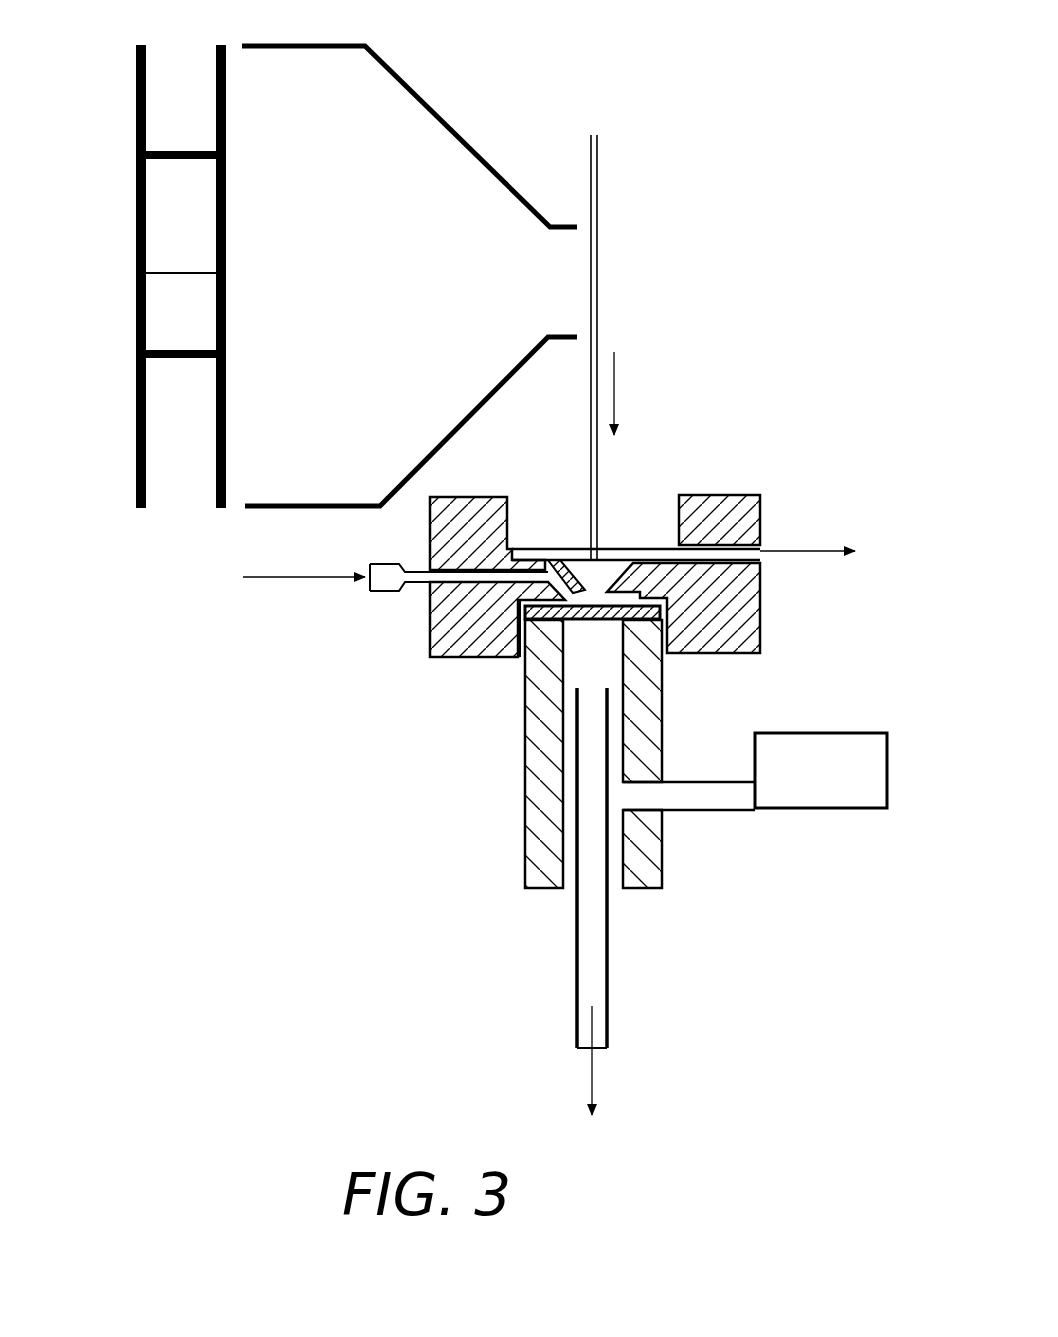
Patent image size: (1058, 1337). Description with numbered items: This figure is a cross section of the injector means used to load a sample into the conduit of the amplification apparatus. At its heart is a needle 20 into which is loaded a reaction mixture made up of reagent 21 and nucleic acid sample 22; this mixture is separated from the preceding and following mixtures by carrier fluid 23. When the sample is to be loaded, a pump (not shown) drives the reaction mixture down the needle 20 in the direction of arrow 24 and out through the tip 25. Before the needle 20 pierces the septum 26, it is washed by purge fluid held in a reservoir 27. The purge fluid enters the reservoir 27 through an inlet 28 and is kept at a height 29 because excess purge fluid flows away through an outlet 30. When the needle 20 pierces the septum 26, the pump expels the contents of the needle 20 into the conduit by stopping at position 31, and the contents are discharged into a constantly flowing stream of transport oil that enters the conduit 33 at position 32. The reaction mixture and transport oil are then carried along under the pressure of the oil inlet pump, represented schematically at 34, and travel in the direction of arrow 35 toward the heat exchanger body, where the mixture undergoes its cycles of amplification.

The needle 20 is at (598, 274).
The reagent 21 is at (170, 208).
The nucleic acid sample 22 is at (172, 305).
The carrier fluid 23 is at (170, 99).
The arrow 24 is at (636, 393).
The tip 25 is at (610, 555).
The septum 26 is at (520, 618).
The reservoir 27 is at (607, 570).
The inlet 28 is at (418, 588).
The height 29 is at (528, 548).
The outlet 30 is at (807, 534).
The position 31 is at (593, 757).
The position 32 is at (735, 797).
The conduit 33 is at (607, 977).
The oil inlet pump 34 is at (857, 790).
The arrow 35 is at (618, 1060).